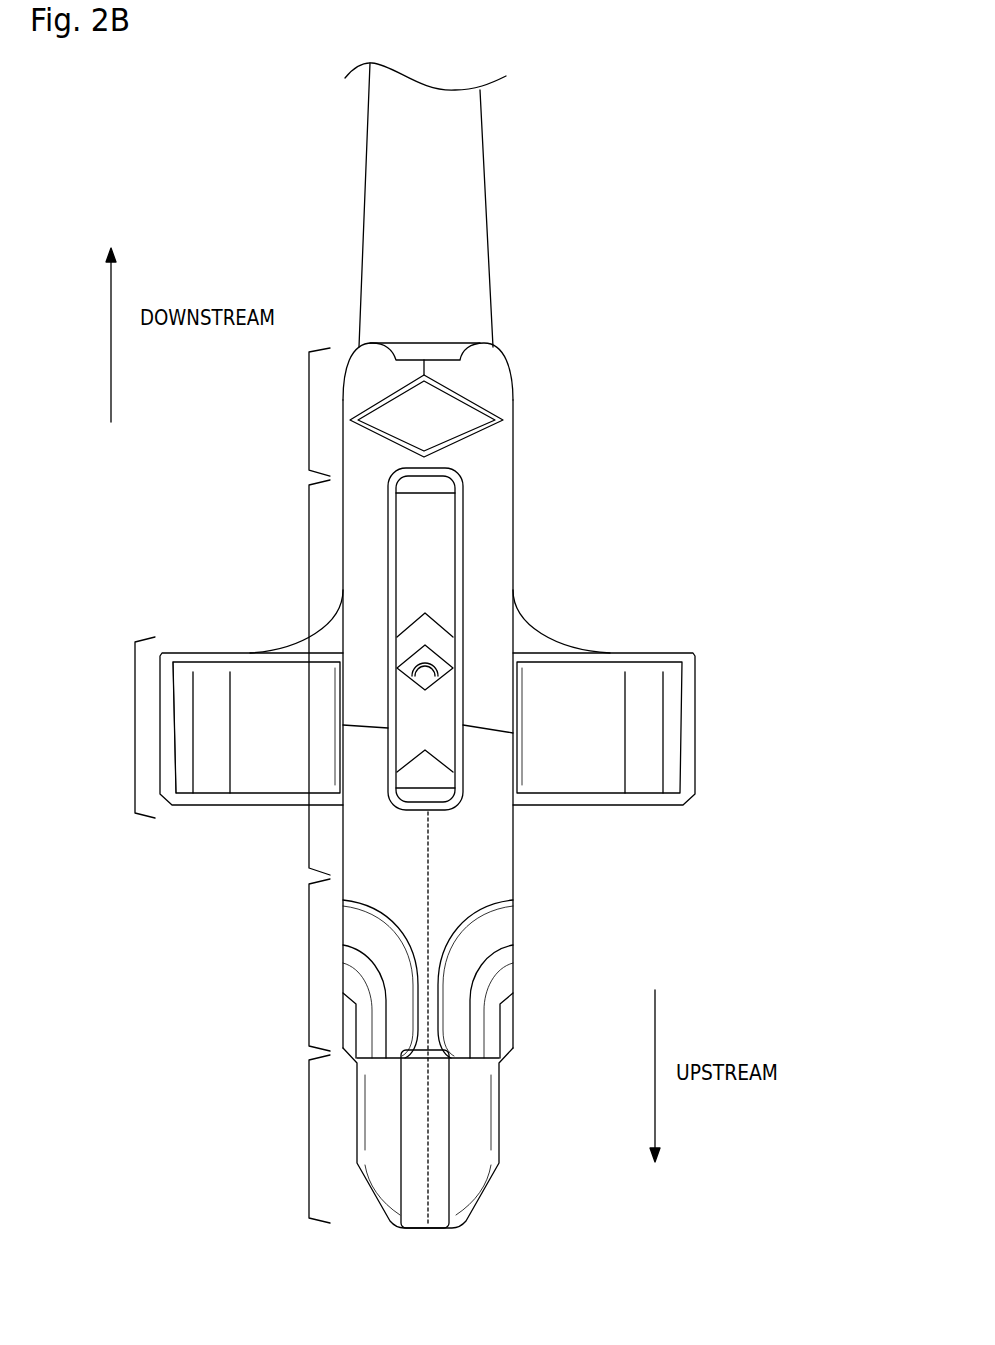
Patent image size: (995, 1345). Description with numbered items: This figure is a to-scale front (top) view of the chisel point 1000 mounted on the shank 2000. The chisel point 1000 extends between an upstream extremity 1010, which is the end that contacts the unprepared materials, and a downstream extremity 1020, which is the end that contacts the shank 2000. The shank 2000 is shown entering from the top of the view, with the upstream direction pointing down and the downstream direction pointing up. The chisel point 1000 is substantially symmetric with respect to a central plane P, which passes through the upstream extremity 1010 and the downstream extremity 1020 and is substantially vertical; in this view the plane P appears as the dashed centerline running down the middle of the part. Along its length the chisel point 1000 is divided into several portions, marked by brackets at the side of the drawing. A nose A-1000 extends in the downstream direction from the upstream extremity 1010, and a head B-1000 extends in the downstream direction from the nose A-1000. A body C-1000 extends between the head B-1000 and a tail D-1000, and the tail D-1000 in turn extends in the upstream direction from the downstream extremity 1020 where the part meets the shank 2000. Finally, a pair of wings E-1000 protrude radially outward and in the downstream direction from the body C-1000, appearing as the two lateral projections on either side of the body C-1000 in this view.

The shank 2000 is at (341, 193).
The chisel point 1000 is at (390, 809).
The downstream extremity 1020 is at (505, 368).
The upstream extremity 1010 is at (475, 1213).
The central plane P is at (428, 862).
The tail D-1000 is at (308, 412).
The body C-1000 is at (308, 584).
The pair of wings E-1000 is at (135, 731).
The head B-1000 is at (308, 974).
The nose A-1000 is at (380, 1161).